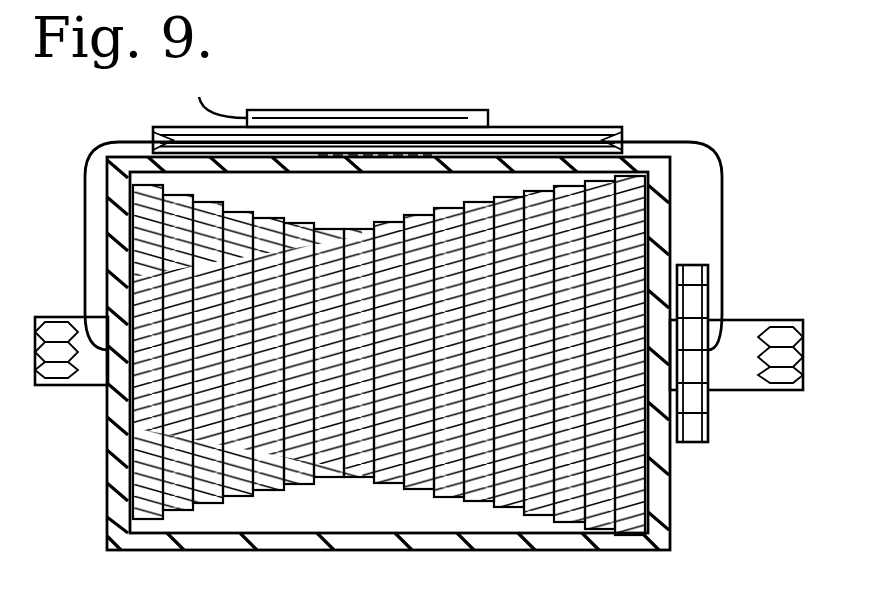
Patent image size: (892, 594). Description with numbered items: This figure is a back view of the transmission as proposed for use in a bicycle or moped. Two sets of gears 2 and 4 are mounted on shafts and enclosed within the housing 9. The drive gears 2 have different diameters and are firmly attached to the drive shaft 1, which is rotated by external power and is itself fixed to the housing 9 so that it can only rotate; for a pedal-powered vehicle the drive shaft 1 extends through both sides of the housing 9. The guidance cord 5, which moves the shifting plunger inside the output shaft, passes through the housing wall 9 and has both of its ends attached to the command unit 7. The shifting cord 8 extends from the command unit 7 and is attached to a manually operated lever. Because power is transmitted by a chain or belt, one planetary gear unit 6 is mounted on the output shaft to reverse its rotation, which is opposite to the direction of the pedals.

The drive shaft 1 is at (735, 350).
The drive gears 2 is at (262, 463).
The second set of gears 4 is at (297, 385).
The guidance cord 5 is at (724, 216).
The planetary gear unit 6 is at (690, 425).
The command unit 7 is at (520, 133).
The shifting cord 8 is at (212, 110).
The housing 9 is at (658, 230).